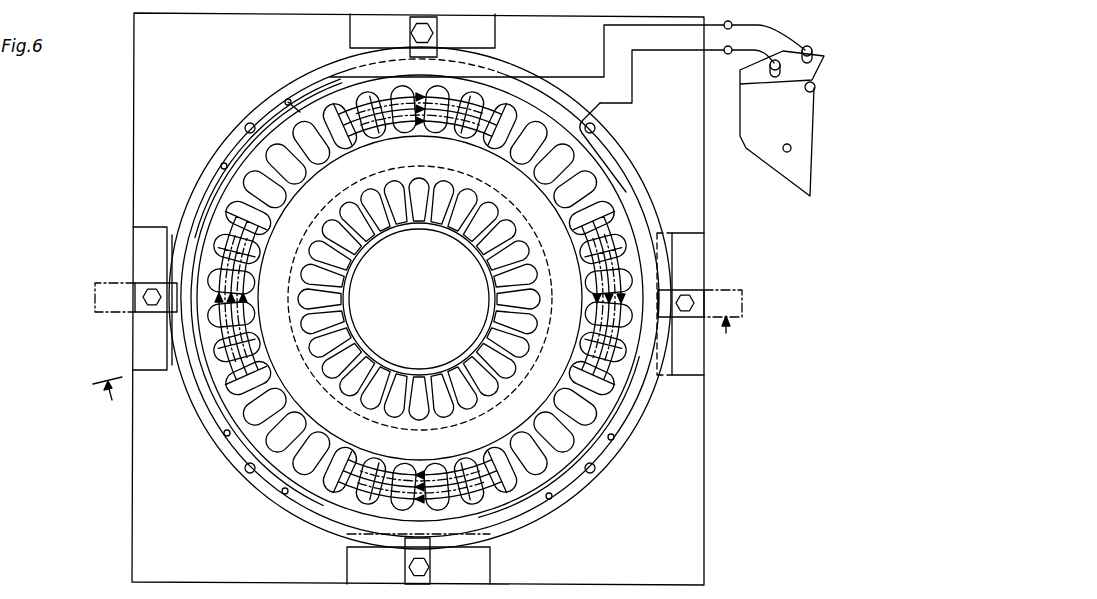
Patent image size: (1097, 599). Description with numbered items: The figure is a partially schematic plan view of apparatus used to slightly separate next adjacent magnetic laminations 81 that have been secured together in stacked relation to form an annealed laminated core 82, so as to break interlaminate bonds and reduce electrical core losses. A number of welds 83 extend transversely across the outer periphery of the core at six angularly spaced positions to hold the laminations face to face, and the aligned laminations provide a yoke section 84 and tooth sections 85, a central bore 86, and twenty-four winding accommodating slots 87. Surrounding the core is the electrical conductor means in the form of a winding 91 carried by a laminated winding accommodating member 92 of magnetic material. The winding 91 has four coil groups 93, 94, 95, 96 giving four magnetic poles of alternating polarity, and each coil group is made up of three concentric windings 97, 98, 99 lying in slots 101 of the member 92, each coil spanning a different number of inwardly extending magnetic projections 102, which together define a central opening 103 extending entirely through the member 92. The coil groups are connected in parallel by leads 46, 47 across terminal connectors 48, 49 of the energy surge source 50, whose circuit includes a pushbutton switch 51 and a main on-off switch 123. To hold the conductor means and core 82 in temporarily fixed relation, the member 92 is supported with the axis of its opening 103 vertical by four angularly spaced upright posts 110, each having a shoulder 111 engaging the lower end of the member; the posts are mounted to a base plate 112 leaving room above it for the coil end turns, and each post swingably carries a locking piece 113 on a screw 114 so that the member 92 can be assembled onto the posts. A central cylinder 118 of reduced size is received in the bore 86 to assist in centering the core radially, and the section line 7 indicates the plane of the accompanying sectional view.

The section line 7- 7 is at (411, 370).
The lead 46 is at (754, 36).
The lead 47 is at (742, 52).
The terminal connector 48 is at (807, 46).
The terminal connector 49 is at (768, 77).
The energy surge source 50 is at (762, 130).
The pushbutton switch 51 is at (806, 88).
The magnetic laminations 81 is at (596, 190).
The laminated core 82 is at (246, 438).
The welds 83 is at (327, 167).
The yoke section 84 is at (300, 480).
The tooth sections 85 is at (343, 307).
The central bore 86 is at (368, 360).
The winding accommodating slots 87 is at (513, 323).
The winding 91 is at (478, 109).
The laminated winding accommodating member 92 is at (606, 450).
The coil group 93 is at (428, 88).
The coil group 94 is at (195, 255).
The coil group 95 is at (448, 505).
The coil group 96 is at (641, 262).
The concentric winding 97 is at (363, 137).
The concentric winding 98 is at (347, 152).
The concentric winding 99 is at (323, 157).
The slots 101 is at (607, 391).
The inwardly extending magnetic projections 102 is at (614, 438).
The central opening 103 is at (575, 490).
The upright posts 110 is at (488, 33).
The shoulder 111 is at (487, 53).
The base plate 112 is at (703, 523).
The locking piece 113 is at (676, 312).
The screw 114 is at (411, 33).
The central cylinder 118 is at (415, 270).
The main on-off switch 123 is at (786, 153).